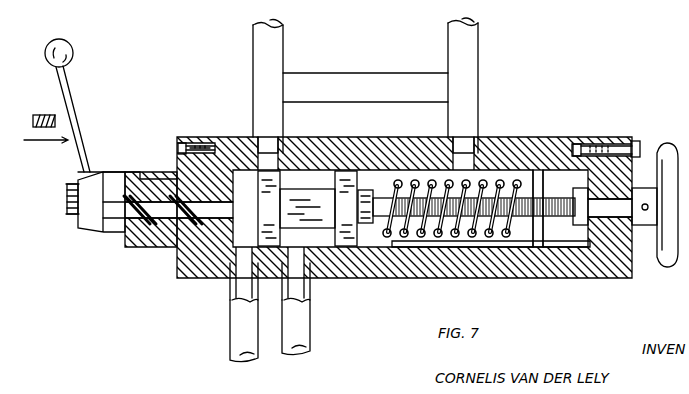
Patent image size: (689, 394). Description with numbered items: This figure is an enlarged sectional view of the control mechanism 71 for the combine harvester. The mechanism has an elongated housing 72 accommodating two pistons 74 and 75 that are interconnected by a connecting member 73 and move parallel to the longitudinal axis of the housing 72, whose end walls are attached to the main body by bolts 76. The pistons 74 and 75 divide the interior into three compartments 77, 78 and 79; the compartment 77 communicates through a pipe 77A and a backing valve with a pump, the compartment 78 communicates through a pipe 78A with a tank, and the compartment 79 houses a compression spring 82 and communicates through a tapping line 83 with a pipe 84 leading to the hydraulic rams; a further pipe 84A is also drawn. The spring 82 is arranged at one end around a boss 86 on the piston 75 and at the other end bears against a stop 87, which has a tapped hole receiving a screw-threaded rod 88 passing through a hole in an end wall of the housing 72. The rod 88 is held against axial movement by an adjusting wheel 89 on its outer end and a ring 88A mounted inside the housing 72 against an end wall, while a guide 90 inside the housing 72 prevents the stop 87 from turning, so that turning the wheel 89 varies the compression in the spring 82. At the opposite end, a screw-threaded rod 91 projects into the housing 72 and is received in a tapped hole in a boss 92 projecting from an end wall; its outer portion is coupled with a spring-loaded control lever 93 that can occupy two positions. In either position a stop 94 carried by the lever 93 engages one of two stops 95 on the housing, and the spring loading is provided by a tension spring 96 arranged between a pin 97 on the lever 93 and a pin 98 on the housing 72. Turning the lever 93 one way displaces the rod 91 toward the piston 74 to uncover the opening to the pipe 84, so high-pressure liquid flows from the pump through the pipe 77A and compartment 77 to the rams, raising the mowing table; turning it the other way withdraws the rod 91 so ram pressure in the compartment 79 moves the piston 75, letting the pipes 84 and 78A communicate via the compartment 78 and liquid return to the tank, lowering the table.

The control mechanism 71 is at (545, 150).
The housing 72 is at (560, 280).
The connecting member 73 is at (308, 189).
The piston 74 is at (292, 170).
The piston 75 is at (347, 170).
The bolts 76 is at (180, 145).
The compartment 77 is at (232, 280).
The pipe 77A is at (230, 333).
The compartment 78 is at (318, 282).
The pipe 78A is at (312, 330).
The compartment 79 is at (452, 248).
The compression spring 82 is at (420, 248).
The tapping line 83 is at (375, 82).
The pipe 84 is at (253, 60).
The conduit 84A is at (470, 55).
The boss 86 is at (368, 250).
The stop 87 is at (580, 144).
The screw-threaded rod 88 is at (620, 280).
The ring 88A is at (590, 280).
The adjusting wheel 89 is at (668, 268).
The guide 90 is at (500, 250).
The rod 91 is at (160, 245).
The boss 92 is at (126, 238).
The control lever 93 is at (77, 76).
The stop 94 is at (112, 172).
The stops 95 is at (122, 232).
The tension spring 96 is at (66, 198).
The pin 97 is at (70, 185).
The pin 98 is at (68, 215).